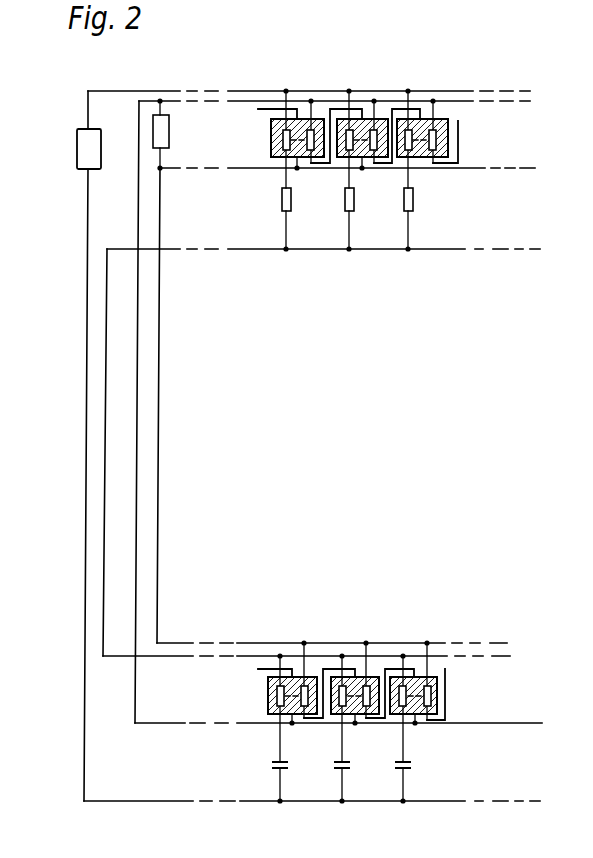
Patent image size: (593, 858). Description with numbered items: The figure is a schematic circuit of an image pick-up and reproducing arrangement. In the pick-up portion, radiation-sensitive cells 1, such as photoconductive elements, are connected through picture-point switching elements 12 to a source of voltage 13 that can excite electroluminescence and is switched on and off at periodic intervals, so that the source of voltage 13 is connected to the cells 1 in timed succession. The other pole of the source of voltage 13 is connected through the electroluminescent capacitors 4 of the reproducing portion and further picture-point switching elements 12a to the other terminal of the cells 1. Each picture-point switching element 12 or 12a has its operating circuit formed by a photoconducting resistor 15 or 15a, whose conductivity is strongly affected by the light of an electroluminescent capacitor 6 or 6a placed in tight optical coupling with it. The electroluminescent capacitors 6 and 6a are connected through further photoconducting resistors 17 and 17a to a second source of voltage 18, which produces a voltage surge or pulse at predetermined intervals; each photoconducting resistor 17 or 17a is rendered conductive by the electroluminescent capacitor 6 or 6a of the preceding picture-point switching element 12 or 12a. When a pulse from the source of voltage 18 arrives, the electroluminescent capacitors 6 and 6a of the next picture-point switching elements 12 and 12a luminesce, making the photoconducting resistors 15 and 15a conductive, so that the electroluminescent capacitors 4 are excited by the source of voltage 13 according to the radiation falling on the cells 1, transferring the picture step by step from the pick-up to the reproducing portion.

The radiation-sensitive cells 1 is at (405, 195).
The electroluminescent capacitors 4 is at (395, 768).
The electroluminescent capacitor 6 is at (301, 131).
The electroluminescent capacitor 6a is at (292, 690).
The picture-point switching element 12 is at (272, 117).
The picture-point switching element 12a is at (268, 712).
The source of voltage 13 is at (85, 144).
The photoconducting resistor 15 is at (287, 136).
The photoconducting resistor 15a is at (270, 673).
The photoconducting resistor 17 is at (318, 131).
The photoconducting resistor 17a is at (312, 688).
The source of voltage 18 is at (161, 125).